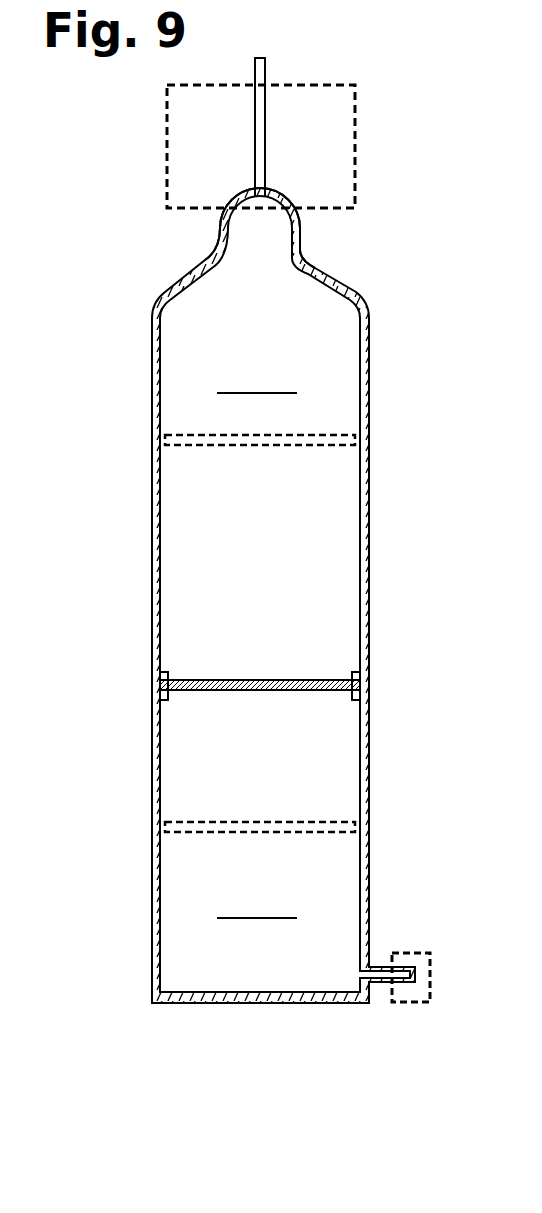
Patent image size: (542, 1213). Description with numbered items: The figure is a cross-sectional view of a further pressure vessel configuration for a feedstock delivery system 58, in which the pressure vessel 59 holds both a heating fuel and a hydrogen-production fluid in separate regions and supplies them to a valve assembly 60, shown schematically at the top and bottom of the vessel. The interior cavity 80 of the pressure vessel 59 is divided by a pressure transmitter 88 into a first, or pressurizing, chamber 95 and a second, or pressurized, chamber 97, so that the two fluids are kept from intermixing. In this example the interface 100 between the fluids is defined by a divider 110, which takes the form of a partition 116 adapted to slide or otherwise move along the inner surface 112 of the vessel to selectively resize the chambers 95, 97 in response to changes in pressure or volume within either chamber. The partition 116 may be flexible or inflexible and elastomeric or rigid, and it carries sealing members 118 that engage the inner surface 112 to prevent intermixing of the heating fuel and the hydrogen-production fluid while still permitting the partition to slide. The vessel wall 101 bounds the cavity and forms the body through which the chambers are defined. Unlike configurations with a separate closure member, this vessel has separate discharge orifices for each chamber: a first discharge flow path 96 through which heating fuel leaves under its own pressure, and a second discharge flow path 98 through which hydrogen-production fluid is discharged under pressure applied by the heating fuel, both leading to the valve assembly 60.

The feedstock delivery system 58 is at (120, 278).
The pressure vessel 59 is at (150, 385).
The valve assembly 60 is at (163, 130).
The interior cavity 80 is at (337, 310).
The pressure transmitter 88 is at (322, 668).
The first chamber 95 is at (257, 377).
The first discharge flow path 96 is at (377, 966).
The second chamber 97 is at (257, 903).
The second discharge flow path 98 is at (265, 95).
The interface 100 is at (322, 700).
The side wall 101 is at (343, 527).
The divider 110 is at (198, 694).
The inner surface 112 is at (156, 525).
The partition 116 is at (233, 446).
The sealing members 118 is at (164, 672).